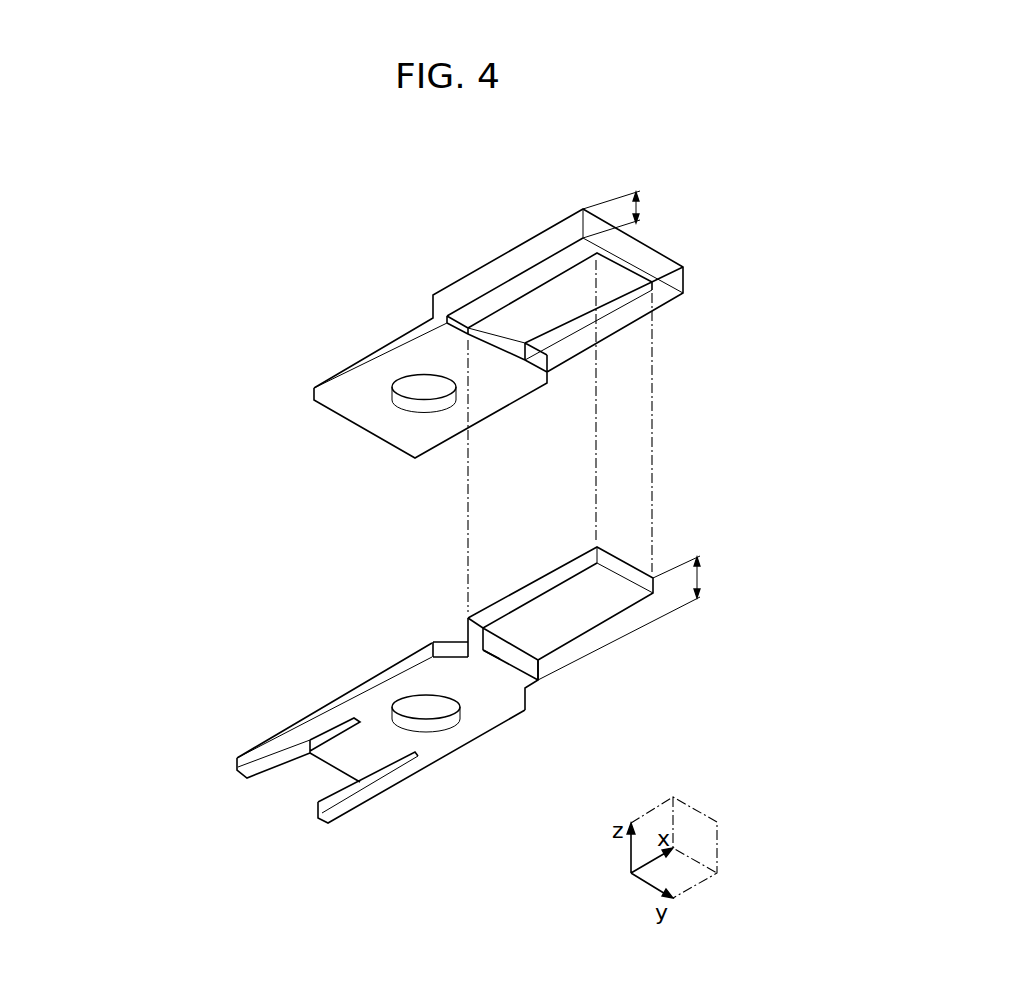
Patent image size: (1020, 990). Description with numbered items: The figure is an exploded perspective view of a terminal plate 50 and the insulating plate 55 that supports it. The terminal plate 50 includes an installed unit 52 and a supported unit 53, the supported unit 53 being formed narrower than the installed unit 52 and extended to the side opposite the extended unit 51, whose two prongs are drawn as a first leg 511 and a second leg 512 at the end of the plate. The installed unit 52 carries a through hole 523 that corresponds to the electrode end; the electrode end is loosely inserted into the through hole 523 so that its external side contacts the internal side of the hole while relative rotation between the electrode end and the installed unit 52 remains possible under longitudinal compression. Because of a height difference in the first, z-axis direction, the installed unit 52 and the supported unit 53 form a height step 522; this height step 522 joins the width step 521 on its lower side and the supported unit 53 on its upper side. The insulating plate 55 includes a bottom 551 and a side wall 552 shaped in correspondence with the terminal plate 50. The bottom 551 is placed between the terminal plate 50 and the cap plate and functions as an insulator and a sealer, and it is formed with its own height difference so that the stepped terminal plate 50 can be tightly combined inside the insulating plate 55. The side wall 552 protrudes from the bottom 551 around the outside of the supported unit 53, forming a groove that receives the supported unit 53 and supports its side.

The terminal plate 50 is at (474, 755).
The extended unit 51 is at (381, 803).
The first leg 511 is at (332, 818).
The second leg 512 is at (265, 762).
The installed unit 52 is at (429, 733).
The width step 521 is at (448, 648).
The height step 522 is at (510, 653).
The through hole 523 is at (436, 724).
The supported unit 53 is at (587, 612).
The insulating plate 55 is at (484, 335).
The bottom 551 is at (360, 367).
The side wall 552 is at (563, 330).